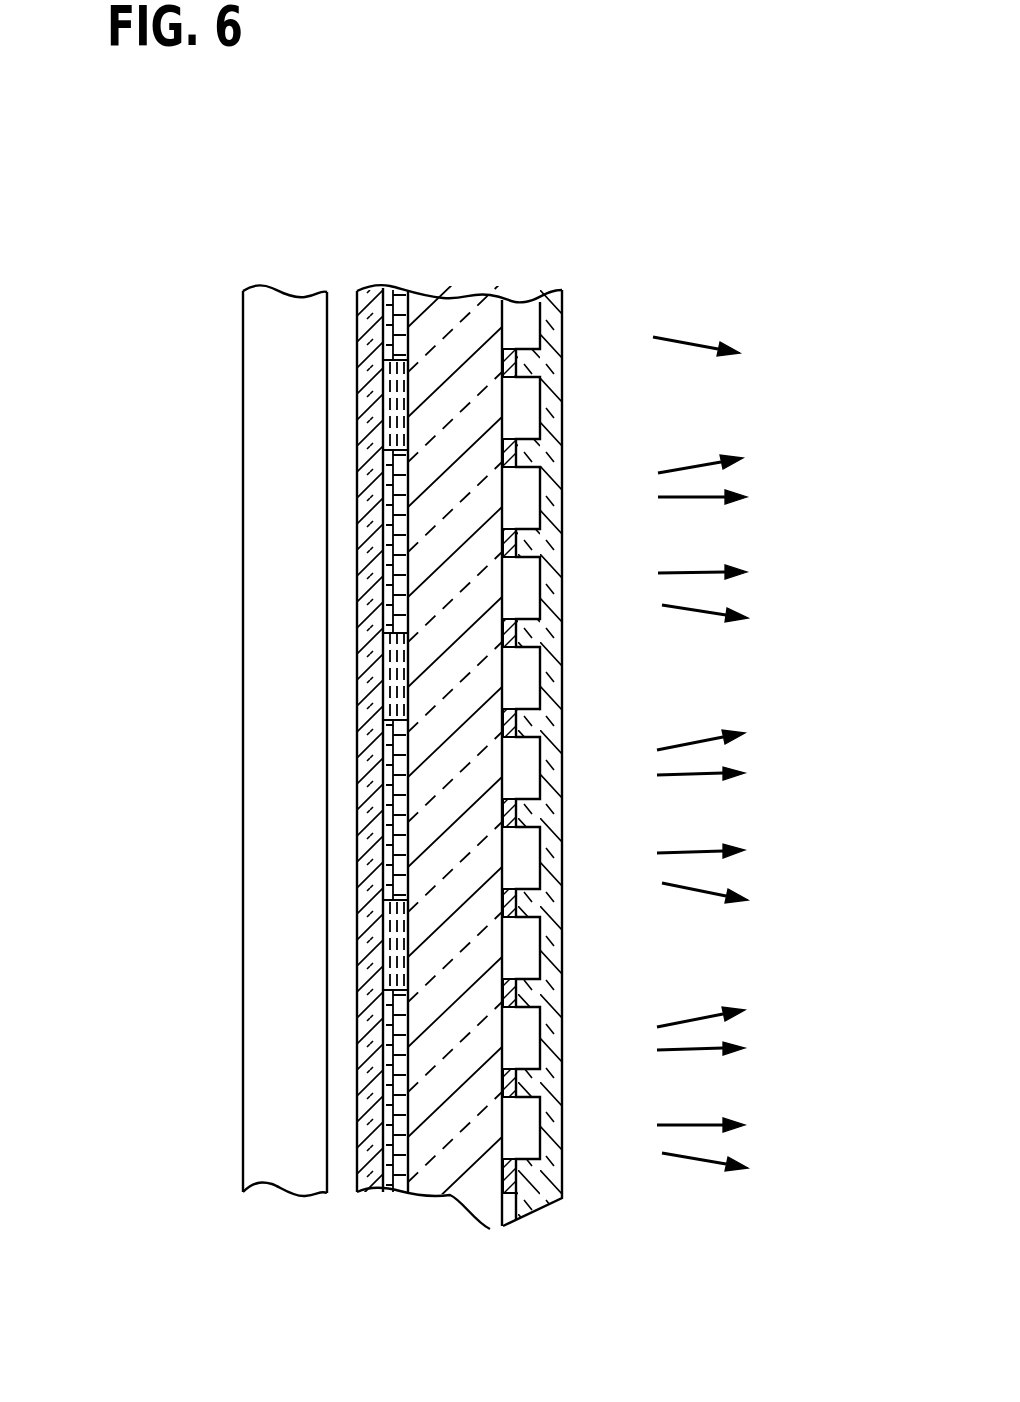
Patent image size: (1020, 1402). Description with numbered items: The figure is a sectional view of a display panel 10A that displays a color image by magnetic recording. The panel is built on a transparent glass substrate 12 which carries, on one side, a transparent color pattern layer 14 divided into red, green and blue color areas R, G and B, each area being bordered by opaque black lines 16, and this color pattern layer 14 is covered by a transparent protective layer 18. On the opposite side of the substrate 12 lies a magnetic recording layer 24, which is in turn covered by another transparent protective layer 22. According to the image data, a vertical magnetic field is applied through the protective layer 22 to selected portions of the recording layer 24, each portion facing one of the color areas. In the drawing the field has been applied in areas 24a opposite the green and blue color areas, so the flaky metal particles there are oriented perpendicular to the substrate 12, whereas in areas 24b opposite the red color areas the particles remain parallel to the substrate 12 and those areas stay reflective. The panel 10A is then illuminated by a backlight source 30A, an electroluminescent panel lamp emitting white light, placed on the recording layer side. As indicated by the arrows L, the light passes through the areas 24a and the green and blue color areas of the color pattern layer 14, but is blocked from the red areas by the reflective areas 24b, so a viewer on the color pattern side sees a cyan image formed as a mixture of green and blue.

The display panel 10A is at (534, 278).
The transparent glass substrate 12 is at (452, 1200).
The color pattern layer 14 is at (530, 698).
The black lines 16 is at (505, 810).
The transparent protective layer 18 is at (553, 990).
The transparent protective layer 22 is at (362, 287).
The magnetic recording layer 24 is at (245, 673).
The areas 24a is at (386, 565).
The areas 24b is at (395, 670).
The backlight source 30A is at (257, 430).
The arrows L is at (693, 465).